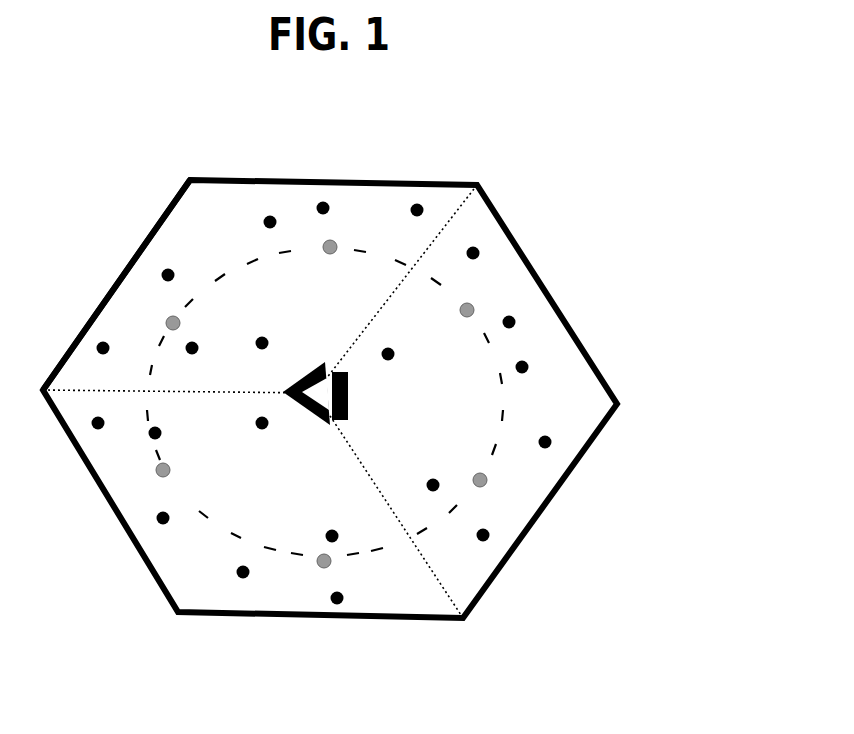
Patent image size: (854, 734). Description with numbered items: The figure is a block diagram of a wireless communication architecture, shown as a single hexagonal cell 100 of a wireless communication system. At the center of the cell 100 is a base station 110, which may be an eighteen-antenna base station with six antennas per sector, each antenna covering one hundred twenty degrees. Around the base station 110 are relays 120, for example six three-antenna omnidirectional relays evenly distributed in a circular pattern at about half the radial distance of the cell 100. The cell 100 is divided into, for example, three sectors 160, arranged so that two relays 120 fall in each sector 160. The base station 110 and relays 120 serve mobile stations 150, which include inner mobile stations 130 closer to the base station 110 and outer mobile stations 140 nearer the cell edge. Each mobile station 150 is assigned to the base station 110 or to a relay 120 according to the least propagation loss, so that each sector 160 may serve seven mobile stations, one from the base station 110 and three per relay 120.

The cell 100 is at (637, 217).
The base station 110 is at (348, 398).
The relays 120 is at (338, 245).
The inner mobile stations 130 is at (262, 338).
The outer mobile stations 140 is at (278, 205).
The mobile stations 150 is at (332, 110).
The sectors 160 is at (127, 318).